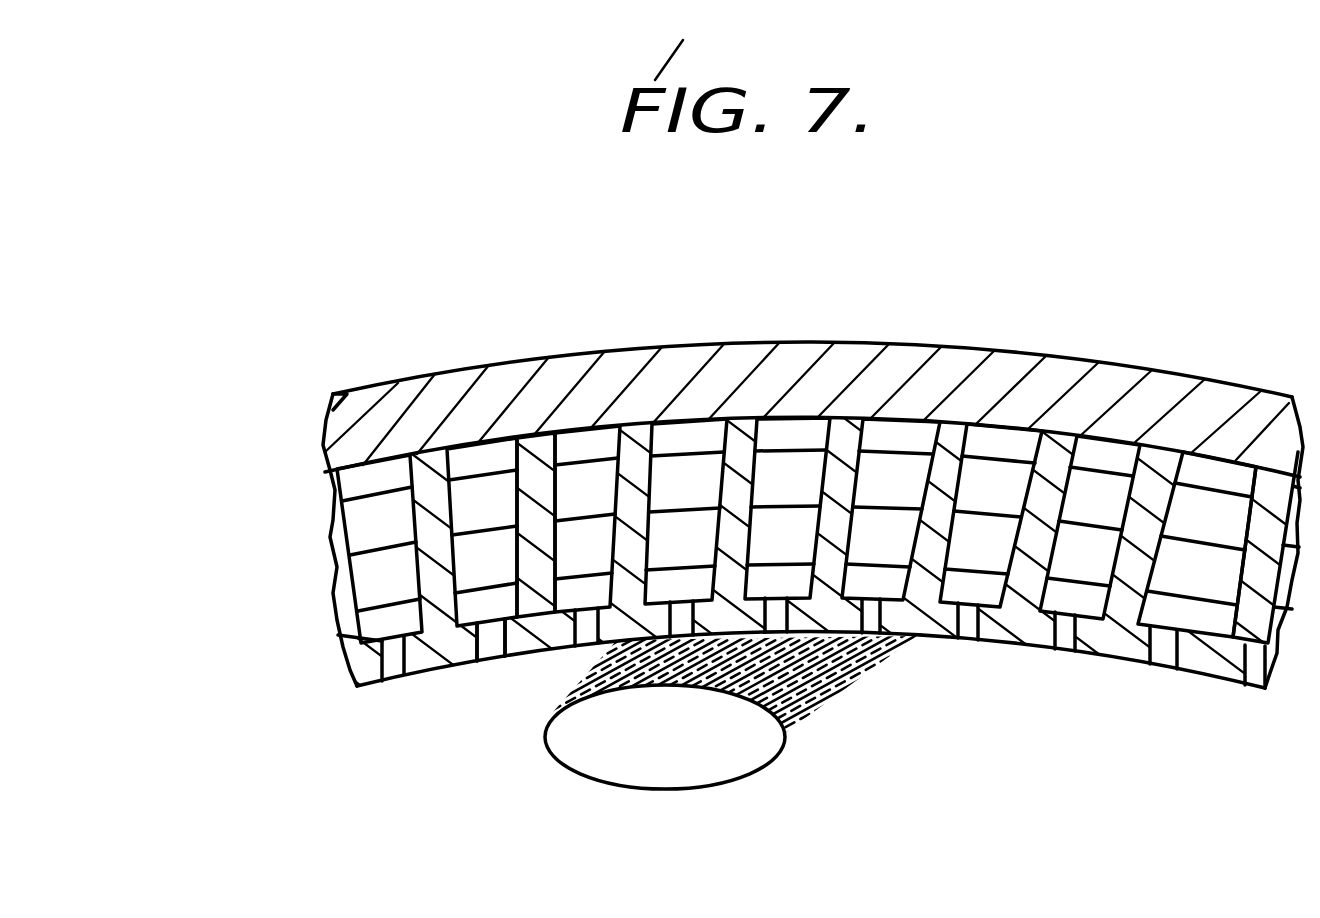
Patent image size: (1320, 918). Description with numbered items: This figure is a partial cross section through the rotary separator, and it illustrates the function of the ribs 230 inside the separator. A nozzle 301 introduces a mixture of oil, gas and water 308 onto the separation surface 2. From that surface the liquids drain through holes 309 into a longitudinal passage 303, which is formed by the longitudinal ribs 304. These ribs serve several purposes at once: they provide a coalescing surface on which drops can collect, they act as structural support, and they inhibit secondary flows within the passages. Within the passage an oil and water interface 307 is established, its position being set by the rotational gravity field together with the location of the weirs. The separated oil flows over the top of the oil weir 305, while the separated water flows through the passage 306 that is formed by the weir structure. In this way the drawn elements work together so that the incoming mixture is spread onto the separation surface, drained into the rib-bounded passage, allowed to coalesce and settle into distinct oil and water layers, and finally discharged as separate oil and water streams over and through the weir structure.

The separation surface 2 is at (1202, 655).
The ribs 230 is at (553, 493).
The nozzle 301 is at (668, 763).
The longitudinal passage 303 is at (788, 465).
The longitudinal ribs 304 is at (955, 474).
The oil weir 305 is at (385, 603).
The passage 306 is at (1117, 465).
The oil and water interface 307 is at (485, 530).
The mixture of oil, gas and water 308 is at (835, 690).
The holes 309 is at (488, 640).